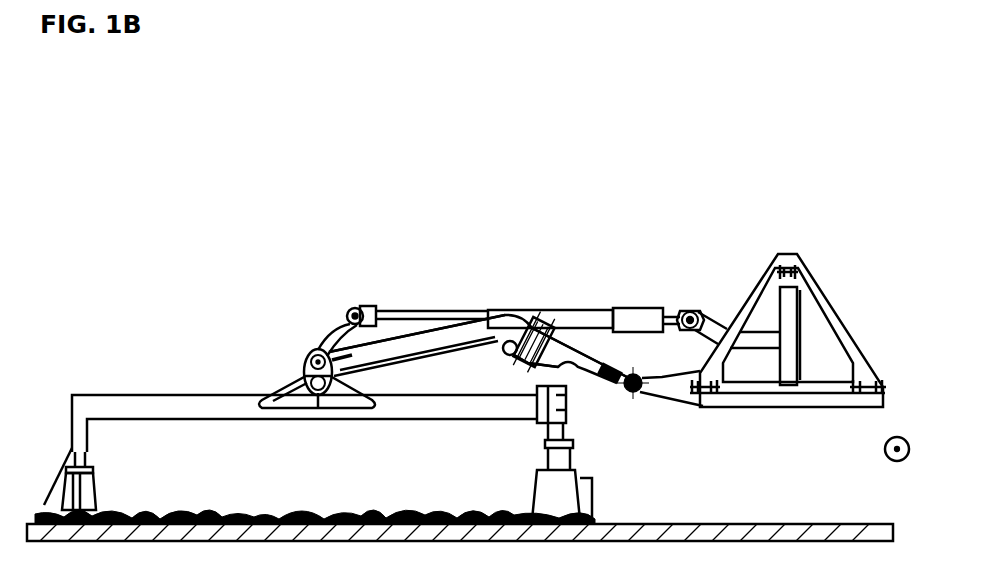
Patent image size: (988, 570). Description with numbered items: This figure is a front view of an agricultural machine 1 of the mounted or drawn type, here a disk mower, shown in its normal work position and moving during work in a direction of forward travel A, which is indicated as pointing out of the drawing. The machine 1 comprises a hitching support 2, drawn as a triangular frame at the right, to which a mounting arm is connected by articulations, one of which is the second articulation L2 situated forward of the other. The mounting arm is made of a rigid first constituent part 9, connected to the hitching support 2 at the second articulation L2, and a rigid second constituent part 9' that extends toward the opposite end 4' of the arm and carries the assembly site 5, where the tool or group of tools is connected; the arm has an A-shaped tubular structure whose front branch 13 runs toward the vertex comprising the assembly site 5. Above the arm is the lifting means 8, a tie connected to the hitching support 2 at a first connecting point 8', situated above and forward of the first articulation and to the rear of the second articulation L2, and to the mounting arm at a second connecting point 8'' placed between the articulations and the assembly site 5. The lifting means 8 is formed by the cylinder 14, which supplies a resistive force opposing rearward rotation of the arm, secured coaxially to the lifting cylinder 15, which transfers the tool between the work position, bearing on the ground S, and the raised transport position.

The agricultural machine 1 is at (346, 120).
The hitching support 2 is at (843, 300).
The opposite end of the arm 4' is at (318, 409).
The assembly site 5 is at (315, 349).
The lifting means 8 is at (584, 243).
The first connecting point 8' is at (702, 281).
The second connecting point 8'' is at (403, 276).
The first constituent part 9 is at (576, 406).
The second constituent part 9' is at (478, 273).
The front branch 13 is at (417, 333).
The cylinder 14 is at (646, 271).
The lifting cylinder 15 is at (578, 310).
The second articulation L2 is at (639, 393).
The ground S is at (748, 524).
The direction of forward travel A is at (909, 451).